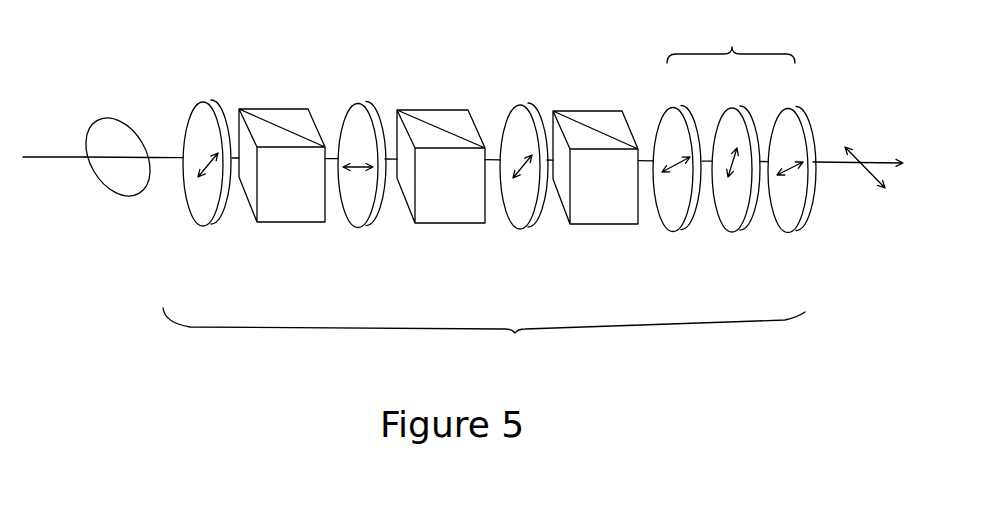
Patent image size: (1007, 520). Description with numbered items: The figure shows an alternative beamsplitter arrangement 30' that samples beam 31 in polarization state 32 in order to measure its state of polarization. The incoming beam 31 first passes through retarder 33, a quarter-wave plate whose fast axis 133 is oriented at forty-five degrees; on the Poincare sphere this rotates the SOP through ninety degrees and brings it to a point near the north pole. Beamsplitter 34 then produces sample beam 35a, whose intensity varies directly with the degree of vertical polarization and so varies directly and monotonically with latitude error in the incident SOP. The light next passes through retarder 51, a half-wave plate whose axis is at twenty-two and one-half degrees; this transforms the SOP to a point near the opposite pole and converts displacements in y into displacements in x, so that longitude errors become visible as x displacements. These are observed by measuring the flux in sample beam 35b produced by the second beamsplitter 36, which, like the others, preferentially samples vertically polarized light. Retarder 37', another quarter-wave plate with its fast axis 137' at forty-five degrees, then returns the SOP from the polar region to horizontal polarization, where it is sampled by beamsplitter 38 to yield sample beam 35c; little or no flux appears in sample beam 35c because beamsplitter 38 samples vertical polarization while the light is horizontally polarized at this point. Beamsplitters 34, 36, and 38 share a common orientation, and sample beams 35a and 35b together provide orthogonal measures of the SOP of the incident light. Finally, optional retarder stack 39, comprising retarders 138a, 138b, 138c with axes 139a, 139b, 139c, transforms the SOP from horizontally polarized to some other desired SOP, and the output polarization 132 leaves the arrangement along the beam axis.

The beam 31 is at (63, 160).
The polarization state 32 is at (120, 123).
The retarder 33 is at (218, 102).
The fast axis 133 is at (195, 182).
The beamsplitter 34 is at (301, 110).
The sample beam 35a is at (287, 178).
The retarder 51 is at (368, 102).
The beamsplitter 36 is at (437, 110).
The sample beam 35b is at (448, 178).
The retarder 37' is at (524, 151).
The fast axis 137' is at (524, 206).
The beamsplitter 38 is at (607, 113).
The sample beam 35c is at (602, 182).
The retarder 138a is at (702, 97).
The retarder 138b is at (752, 118).
The retarder 138c is at (823, 97).
The axis 139a is at (668, 182).
The axis 139b is at (728, 182).
The axis 139c is at (785, 182).
The retarder stack 39 is at (731, 39).
The output polarization direction 132 is at (873, 180).
The beamsplitter arrangement 30' is at (484, 339).